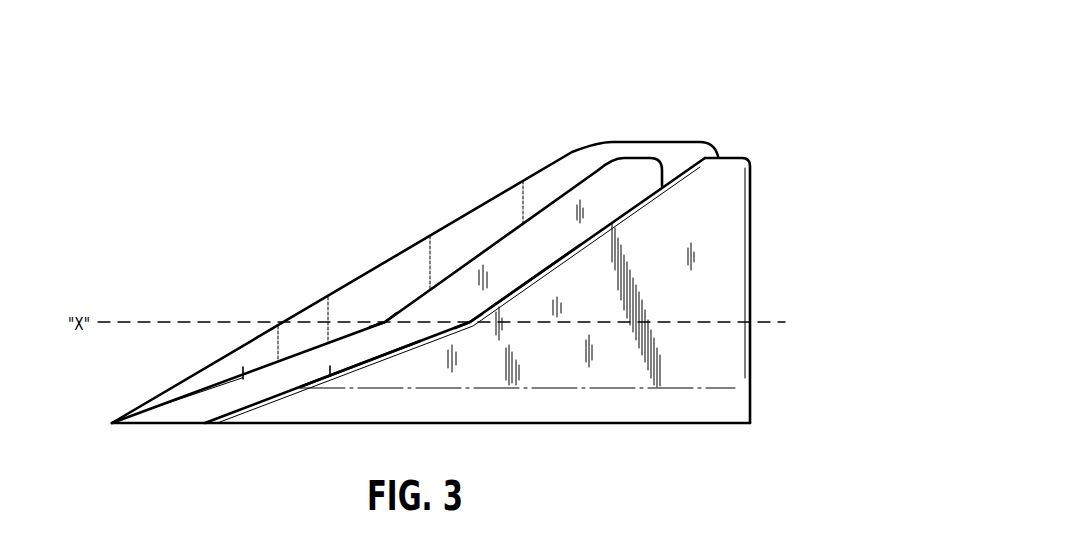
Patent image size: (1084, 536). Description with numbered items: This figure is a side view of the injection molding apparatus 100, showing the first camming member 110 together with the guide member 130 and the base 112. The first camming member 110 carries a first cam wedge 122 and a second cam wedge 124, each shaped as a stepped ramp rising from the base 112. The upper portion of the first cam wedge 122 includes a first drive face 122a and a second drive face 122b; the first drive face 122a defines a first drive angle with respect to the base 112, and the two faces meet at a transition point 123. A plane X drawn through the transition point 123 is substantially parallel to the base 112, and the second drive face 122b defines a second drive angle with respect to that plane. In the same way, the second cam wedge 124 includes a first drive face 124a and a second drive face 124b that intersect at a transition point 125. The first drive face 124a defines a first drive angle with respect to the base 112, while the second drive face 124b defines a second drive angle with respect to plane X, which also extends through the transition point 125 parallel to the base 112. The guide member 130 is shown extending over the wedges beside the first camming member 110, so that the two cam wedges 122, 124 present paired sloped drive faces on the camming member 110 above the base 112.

The injection molding apparatus 100 is at (721, 60).
The first camming member 110 is at (738, 205).
The base 112 is at (680, 424).
The first cam wedge 122 is at (648, 165).
The first drive face 122a is at (237, 379).
The second drive face 122b is at (498, 242).
The transition point 123 is at (383, 322).
The second cam wedge 124 is at (615, 222).
The first drive face 124a is at (373, 358).
The second drive face 124b is at (525, 279).
The transition point 125 is at (470, 323).
The guide member 130 is at (582, 165).